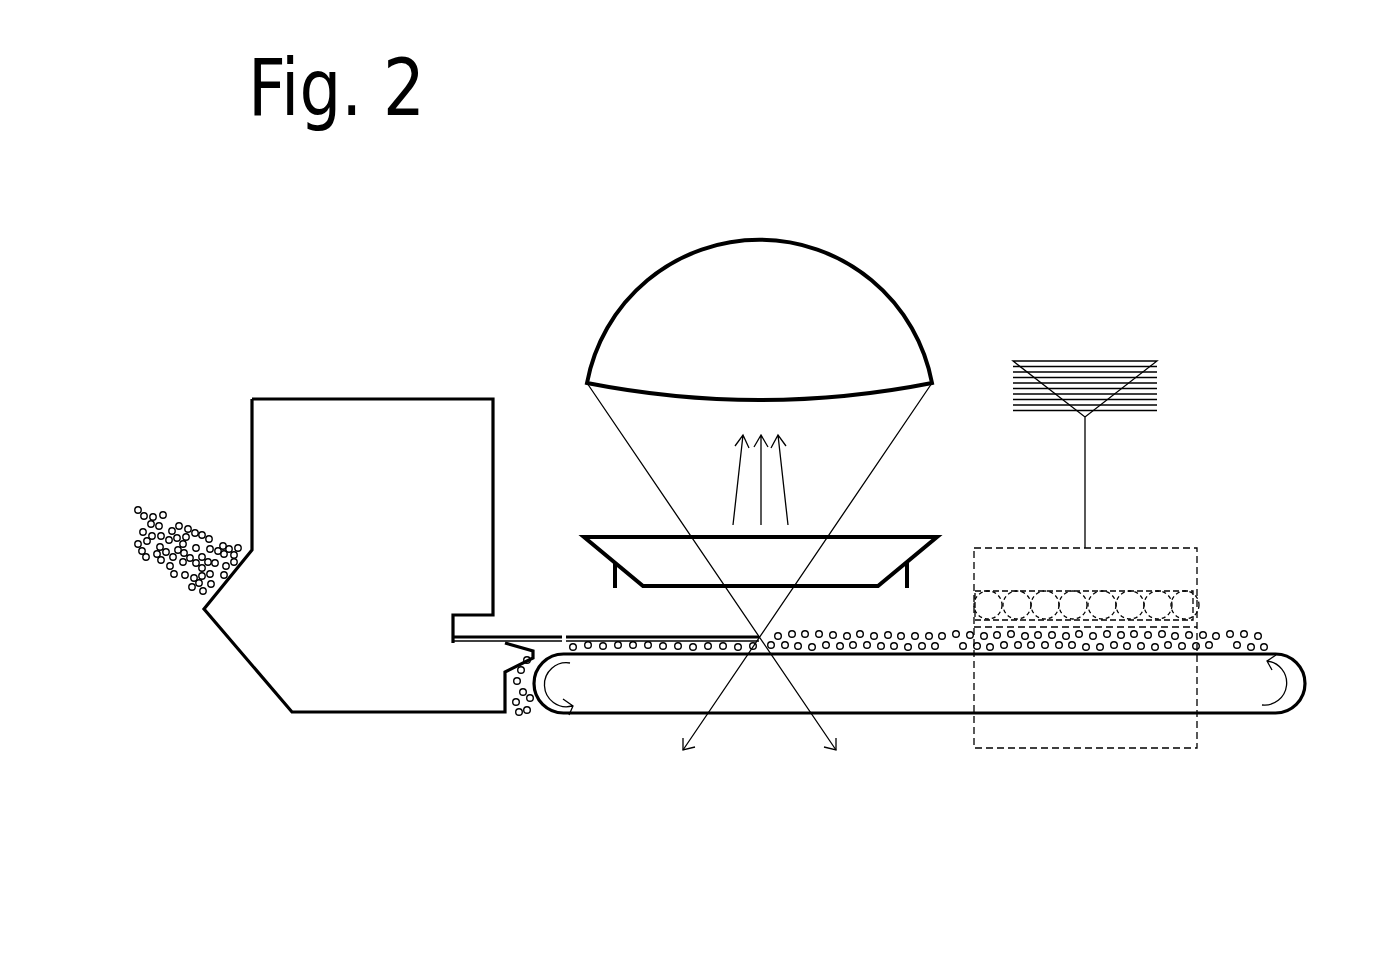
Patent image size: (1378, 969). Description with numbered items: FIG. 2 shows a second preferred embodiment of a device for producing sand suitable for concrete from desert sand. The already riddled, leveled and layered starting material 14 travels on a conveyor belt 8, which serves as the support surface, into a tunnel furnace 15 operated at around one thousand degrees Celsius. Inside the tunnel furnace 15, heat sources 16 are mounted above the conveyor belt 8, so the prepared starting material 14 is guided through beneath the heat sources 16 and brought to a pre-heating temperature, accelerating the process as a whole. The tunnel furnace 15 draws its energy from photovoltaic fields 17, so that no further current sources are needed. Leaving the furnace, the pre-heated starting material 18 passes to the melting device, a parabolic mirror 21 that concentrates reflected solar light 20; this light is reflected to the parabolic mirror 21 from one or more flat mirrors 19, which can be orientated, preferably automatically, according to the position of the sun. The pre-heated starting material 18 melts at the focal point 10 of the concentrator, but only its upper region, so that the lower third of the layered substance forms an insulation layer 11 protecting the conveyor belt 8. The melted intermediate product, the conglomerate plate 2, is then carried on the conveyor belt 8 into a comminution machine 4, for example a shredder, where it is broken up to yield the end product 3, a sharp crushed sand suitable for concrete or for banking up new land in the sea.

The conglomerate plate 2 is at (503, 642).
The end product 3 is at (175, 525).
The comminution machine 4 is at (410, 437).
The conveyor belt 8 is at (1230, 693).
The focal point 10 is at (759, 644).
The insulation layer 11 is at (646, 649).
The starting material 14 is at (1230, 643).
The tunnel furnace 15 is at (1154, 571).
The heat sources 16 is at (1025, 602).
The photovoltaic fields 17 is at (1160, 381).
The pre-heated starting material 18 is at (948, 649).
The flat mirrors 19 is at (642, 553).
The reflected solar light 20 is at (786, 482).
The parabolic mirror 21 is at (818, 292).